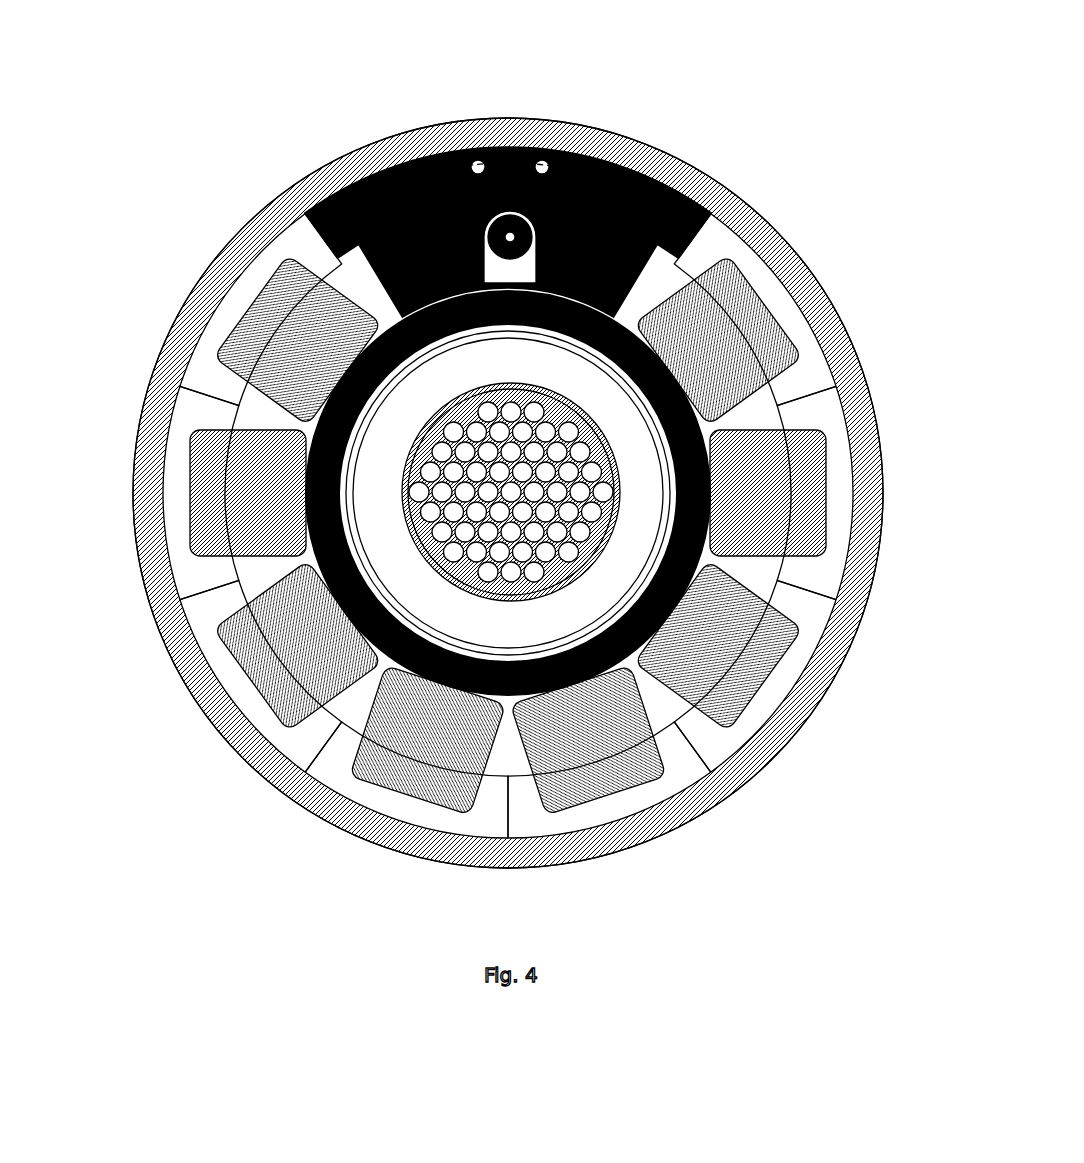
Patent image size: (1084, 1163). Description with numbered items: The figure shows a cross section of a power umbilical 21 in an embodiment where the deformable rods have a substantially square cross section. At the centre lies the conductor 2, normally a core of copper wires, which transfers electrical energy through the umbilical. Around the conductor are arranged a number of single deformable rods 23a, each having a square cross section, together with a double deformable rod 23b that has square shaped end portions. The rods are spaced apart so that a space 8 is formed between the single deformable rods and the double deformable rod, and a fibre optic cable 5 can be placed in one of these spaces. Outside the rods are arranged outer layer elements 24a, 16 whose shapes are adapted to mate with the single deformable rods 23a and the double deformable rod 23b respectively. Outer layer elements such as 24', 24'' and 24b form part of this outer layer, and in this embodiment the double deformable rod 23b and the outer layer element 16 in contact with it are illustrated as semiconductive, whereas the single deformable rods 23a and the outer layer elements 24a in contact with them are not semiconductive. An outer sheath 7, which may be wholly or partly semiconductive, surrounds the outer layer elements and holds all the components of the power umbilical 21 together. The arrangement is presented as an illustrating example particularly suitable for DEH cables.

The power umbilical 21 is at (170, 145).
The double deformable rod 23b is at (395, 178).
The fibre optic cable 5 is at (470, 150).
The outer layer element 16 is at (683, 252).
The stator segment 24b is at (700, 200).
The stator segment 24' is at (212, 308).
The single deformable rod 23a is at (270, 340).
The outer layer element 24a is at (197, 393).
The space 8 is at (770, 415).
The conductor 2 is at (410, 530).
The stator segment 24'' is at (207, 668).
The outer sheath 7 is at (650, 830).